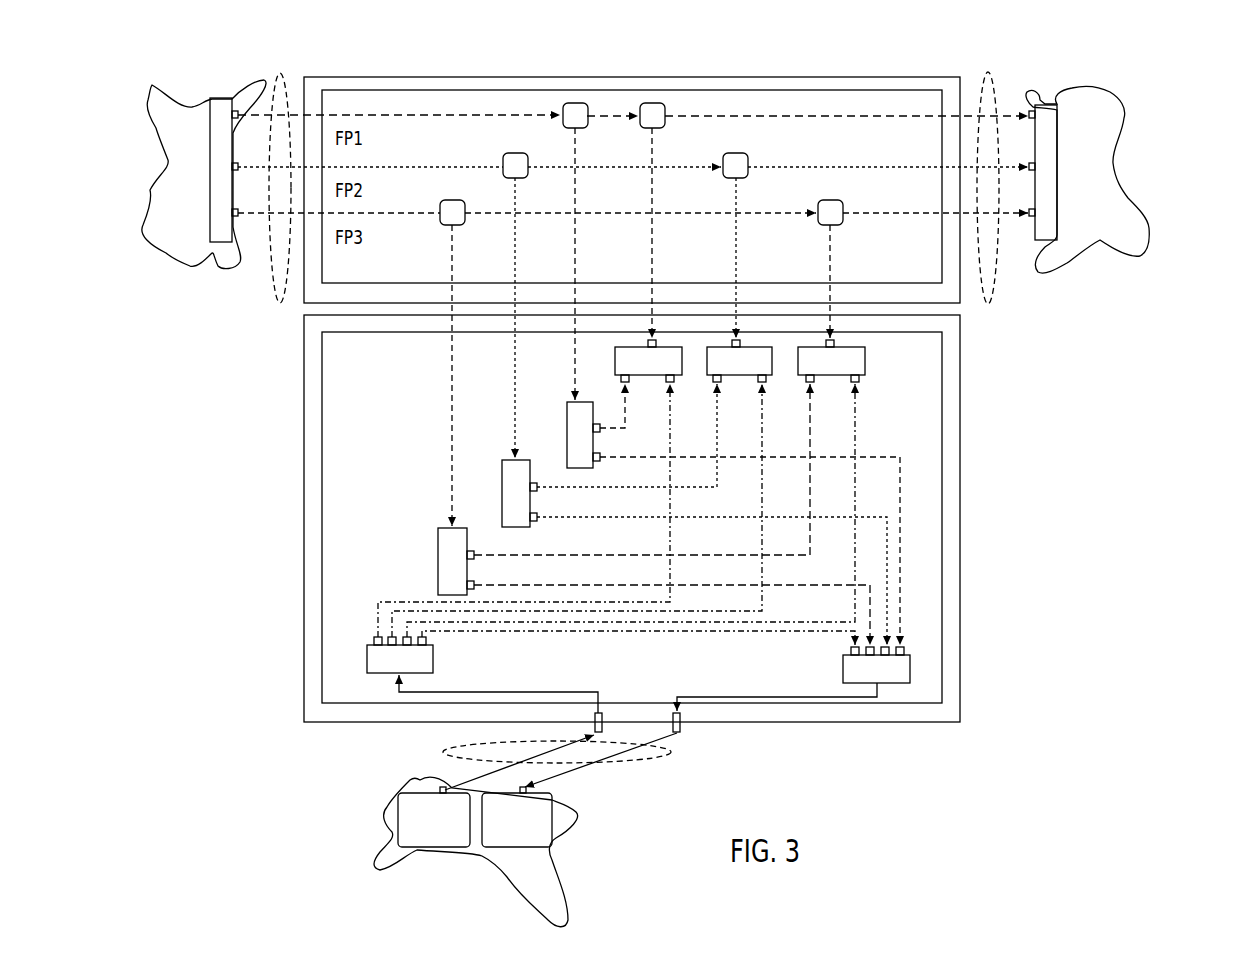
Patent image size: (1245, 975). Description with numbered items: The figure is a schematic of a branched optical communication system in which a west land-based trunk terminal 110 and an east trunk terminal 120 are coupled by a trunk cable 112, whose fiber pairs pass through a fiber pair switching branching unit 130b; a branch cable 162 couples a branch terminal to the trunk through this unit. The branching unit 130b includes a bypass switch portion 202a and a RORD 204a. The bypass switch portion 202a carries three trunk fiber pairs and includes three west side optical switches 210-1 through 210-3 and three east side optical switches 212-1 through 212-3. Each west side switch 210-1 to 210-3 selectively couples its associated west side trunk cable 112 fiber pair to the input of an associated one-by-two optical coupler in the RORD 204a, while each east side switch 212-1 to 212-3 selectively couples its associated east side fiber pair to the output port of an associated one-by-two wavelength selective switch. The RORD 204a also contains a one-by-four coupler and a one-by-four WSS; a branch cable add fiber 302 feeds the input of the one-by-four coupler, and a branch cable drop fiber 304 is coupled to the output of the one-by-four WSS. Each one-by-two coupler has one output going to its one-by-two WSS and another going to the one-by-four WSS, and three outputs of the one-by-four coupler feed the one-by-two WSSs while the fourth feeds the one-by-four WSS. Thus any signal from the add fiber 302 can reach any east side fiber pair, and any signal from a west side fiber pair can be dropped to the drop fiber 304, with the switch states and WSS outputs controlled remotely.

The trunk terminal 110 is at (172, 90).
The trunk cable 112 is at (278, 72).
The trunk terminal 120 is at (1108, 88).
The fiber pair switching branching unit 130b is at (1052, 402).
The branch cable 162 is at (674, 760).
The bypass switch portion 202a is at (617, 76).
The RORD 204a is at (304, 515).
The west side optical switch 210-1 is at (443, 226).
The west side optical switch 210-3 is at (560, 121).
The east side optical switch 212-1 is at (821, 227).
The east side optical switch 212-3 is at (668, 122).
The branch cable add fiber 302 is at (460, 780).
The branch cable drop fiber 304 is at (567, 773).